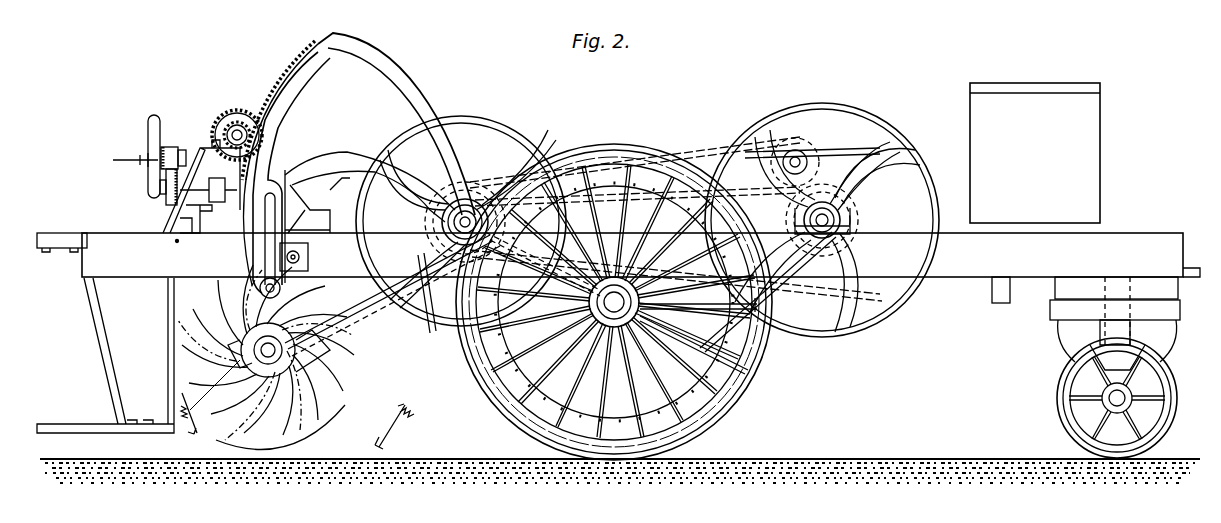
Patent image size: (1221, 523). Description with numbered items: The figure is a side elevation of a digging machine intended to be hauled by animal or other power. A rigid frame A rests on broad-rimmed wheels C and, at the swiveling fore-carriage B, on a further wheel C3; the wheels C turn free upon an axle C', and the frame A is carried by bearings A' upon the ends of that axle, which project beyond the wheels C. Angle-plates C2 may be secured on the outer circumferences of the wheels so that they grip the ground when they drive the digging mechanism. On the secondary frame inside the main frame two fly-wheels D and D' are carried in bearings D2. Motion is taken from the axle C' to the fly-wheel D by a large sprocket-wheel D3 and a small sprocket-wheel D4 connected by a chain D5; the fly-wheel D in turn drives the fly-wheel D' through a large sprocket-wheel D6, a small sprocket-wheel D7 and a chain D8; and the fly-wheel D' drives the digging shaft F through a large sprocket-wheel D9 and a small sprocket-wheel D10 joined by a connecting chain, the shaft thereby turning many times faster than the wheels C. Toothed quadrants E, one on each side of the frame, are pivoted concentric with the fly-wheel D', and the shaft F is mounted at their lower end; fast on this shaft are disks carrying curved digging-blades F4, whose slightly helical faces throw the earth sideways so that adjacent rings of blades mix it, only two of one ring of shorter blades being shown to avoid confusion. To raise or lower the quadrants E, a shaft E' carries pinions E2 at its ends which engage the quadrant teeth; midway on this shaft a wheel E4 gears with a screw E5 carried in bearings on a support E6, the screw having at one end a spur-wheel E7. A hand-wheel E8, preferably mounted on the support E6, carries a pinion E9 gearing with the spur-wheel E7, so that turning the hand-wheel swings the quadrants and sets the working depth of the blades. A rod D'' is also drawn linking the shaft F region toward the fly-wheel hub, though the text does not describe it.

The rigid frame A is at (618, 333).
The bearings A' is at (732, 343).
The swiveling fore-carriage B is at (1140, 316).
The broad-rimmed wheels C is at (614, 280).
The axle or shaft C' is at (598, 302).
The angle-plates C2 is at (612, 150).
The broad-rimmed wheel C3 is at (1178, 393).
The fly-wheel D is at (822, 197).
The fly-wheel D' is at (461, 194).
The connecting rod D'' is at (392, 295).
The bearings D2 is at (840, 220).
The large sprocket-wheel D3 is at (712, 372).
The small sprocket-wheel D4 is at (868, 150).
The chain D5 is at (842, 308).
The large sprocket-wheel D6 is at (760, 158).
The small sprocket-wheel D7 is at (470, 200).
The chain D8 is at (785, 150).
The large sprocket-wheel D9 is at (437, 325).
The small sprocket-wheel D10 is at (240, 358).
The toothed quadrants E is at (359, 157).
The shaft E' is at (280, 110).
The pinions E2 is at (240, 120).
The wheel E4 is at (228, 112).
The screw E5 is at (230, 195).
The support E6 is at (168, 205).
The spur-wheel E7 is at (153, 188).
The hand-wheel E8 is at (150, 140).
The pinion E9 is at (168, 145).
The shaft F is at (243, 340).
The digging-blade F4 is at (250, 432).